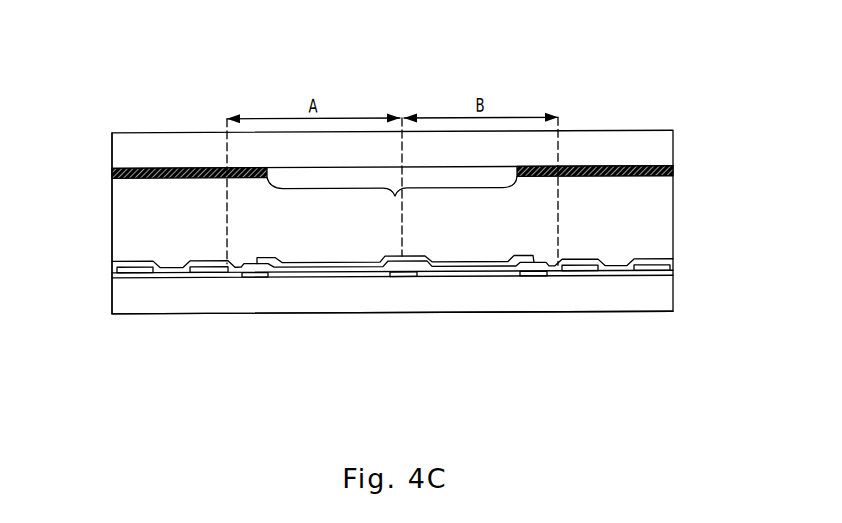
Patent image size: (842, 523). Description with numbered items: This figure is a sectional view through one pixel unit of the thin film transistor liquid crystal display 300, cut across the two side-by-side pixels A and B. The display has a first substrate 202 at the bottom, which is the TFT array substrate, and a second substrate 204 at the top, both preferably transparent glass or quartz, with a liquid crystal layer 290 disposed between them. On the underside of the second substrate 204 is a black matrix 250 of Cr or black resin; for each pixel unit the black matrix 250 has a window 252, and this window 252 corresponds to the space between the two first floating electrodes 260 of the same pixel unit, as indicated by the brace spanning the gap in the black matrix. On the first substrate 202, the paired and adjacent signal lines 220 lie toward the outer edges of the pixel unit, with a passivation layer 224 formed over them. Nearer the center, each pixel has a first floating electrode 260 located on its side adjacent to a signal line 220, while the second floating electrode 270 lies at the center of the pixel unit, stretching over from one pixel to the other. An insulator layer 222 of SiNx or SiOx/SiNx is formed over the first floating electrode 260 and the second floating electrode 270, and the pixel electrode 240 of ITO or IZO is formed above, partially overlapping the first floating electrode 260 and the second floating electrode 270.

The thin film transistor liquid crystal display 300 is at (629, 117).
The second substrate 204 is at (662, 147).
The black matrix 250 is at (674, 171).
The window 252 is at (392, 202).
The liquid crystal layer 290 is at (112, 189).
The first substrate 202 is at (667, 288).
The insulator layer 222 is at (170, 278).
The signal lines 220 is at (135, 269).
The first floating electrode 260 is at (250, 275).
The second floating electrode 270 is at (410, 278).
The passivation layer 224 is at (112, 268).
The pixel electrode 240 is at (330, 261).